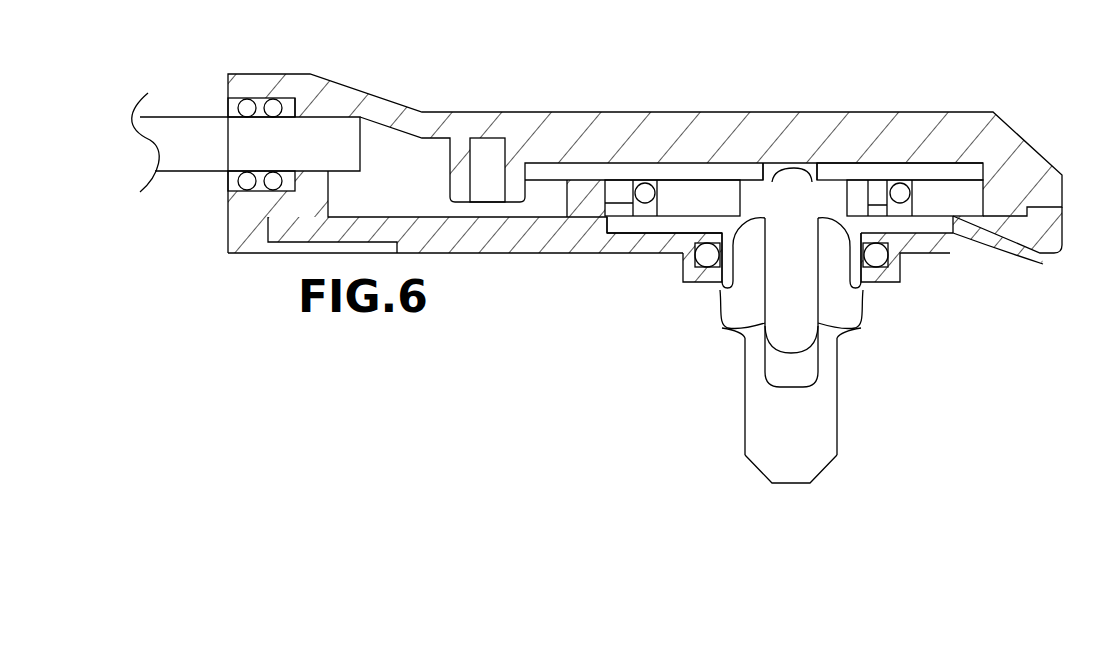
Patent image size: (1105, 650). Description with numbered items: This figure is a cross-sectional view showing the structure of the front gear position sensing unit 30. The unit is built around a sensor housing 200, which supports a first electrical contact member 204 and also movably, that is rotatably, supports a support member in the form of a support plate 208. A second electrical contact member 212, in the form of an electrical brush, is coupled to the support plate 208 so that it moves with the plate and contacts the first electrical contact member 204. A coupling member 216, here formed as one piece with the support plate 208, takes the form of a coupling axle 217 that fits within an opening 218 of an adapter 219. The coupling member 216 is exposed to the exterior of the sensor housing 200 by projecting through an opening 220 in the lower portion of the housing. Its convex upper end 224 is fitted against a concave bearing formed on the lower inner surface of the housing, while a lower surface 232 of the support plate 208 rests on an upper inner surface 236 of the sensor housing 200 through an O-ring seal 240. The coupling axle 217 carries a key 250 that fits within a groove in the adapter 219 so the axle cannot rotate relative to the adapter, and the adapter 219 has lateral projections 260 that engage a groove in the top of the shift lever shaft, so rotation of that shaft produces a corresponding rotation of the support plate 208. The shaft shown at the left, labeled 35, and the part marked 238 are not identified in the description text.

The front gear position sensing unit 30 is at (621, 76).
The shaft 35 is at (178, 173).
The sensor housing 200 is at (546, 118).
The first electrical contact member 204 is at (912, 167).
The support plate 208 is at (928, 223).
The second electrical contact member 212 is at (624, 190).
The coupling member 216 is at (837, 410).
The coupling axle 217 is at (840, 348).
The opening 218 is at (726, 331).
The adapter 219 is at (817, 453).
The opening 220 is at (720, 288).
The convex upper end 224 is at (812, 165).
The lower surface 232 is at (1042, 266).
The upper inner surface 236 is at (633, 223).
The valve member 238 is at (792, 170).
The O-ring seal 240 is at (696, 257).
The key 250 is at (737, 236).
The lateral projections 260 is at (862, 312).